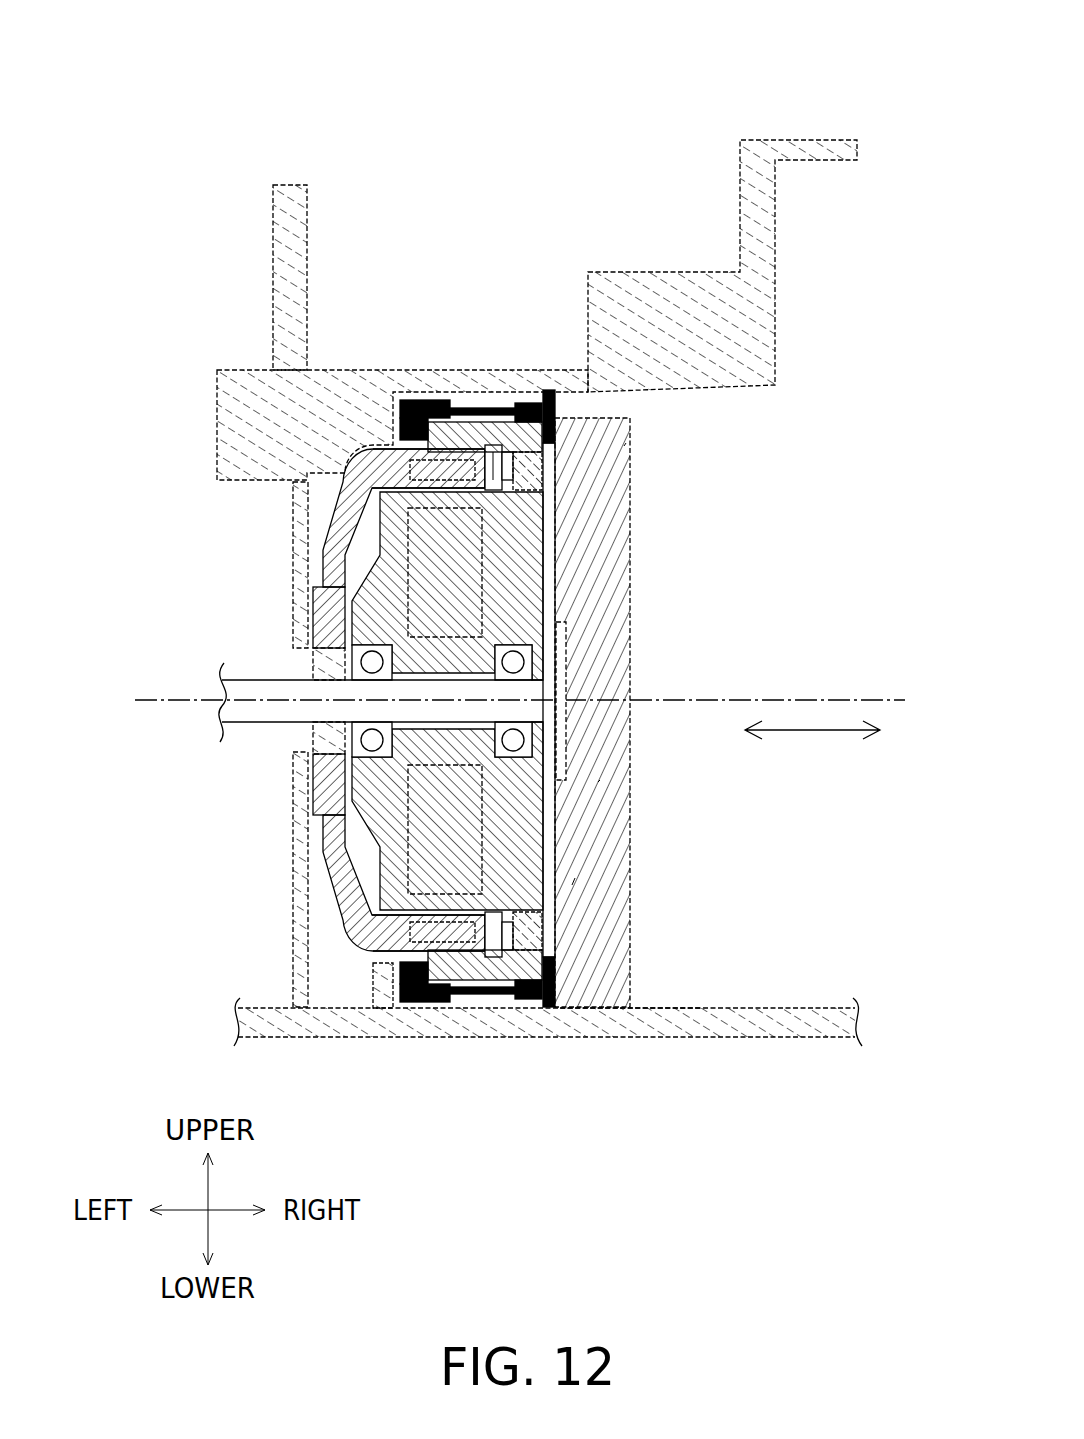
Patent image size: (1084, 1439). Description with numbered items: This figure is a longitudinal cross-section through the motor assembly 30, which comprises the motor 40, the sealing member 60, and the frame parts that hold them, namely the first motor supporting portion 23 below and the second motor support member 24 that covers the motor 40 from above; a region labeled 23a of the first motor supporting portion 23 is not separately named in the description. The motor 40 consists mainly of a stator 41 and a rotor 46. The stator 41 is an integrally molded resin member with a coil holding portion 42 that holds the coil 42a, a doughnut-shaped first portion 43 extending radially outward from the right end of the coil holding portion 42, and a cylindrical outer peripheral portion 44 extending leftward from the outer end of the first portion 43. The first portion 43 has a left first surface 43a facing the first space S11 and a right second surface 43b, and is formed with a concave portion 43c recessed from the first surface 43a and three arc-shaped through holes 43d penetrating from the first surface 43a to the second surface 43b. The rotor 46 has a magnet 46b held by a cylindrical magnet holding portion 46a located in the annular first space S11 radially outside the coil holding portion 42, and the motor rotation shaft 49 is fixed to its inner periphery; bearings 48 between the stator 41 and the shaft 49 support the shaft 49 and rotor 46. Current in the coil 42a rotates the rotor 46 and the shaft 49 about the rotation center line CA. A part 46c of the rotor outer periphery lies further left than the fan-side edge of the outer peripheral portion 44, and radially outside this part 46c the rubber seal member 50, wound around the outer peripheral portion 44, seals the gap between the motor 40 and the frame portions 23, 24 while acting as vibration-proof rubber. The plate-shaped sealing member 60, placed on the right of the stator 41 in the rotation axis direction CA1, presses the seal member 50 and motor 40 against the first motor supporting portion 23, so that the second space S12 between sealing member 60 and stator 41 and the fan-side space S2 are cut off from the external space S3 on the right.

The motor assembly 30 is at (443, 165).
The second motor support member 24 is at (673, 268).
The first motor supporting portion 23 is at (548, 1034).
The upper surface of base plate 23a is at (600, 1008).
The stator 41 is at (308, 517).
The coil holding portion 42 is at (333, 578).
The coil 42a is at (556, 583).
The rotor 46 is at (446, 561).
The magnet holding portion 46a is at (393, 445).
The magnet 46b is at (556, 525).
The part of the outer peripheral portion of the rotor 46c is at (365, 890).
The motor 40 is at (457, 701).
The motor rotation shaft 49 is at (253, 687).
The bearings 48 is at (547, 657).
The sealing member 60 is at (688, 712).
The outer peripheral portion 44 is at (473, 430).
The seal member 50 is at (400, 417).
The first portion 43 is at (583, 778).
The first surface 43a is at (513, 995).
The second surface 43b is at (542, 993).
The concave portion 43c is at (440, 1000).
The through holes 43d is at (548, 440).
The first space S11 is at (493, 452).
The second space S12 is at (626, 443).
The space S2 is at (198, 650).
The space S3 is at (772, 624).
The rotation center line CA is at (778, 700).
The rotation axis direction CA1 is at (846, 734).